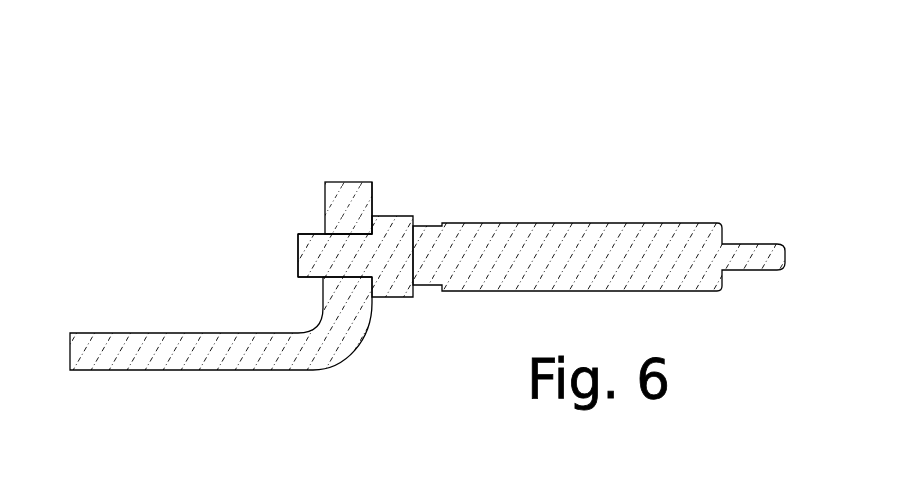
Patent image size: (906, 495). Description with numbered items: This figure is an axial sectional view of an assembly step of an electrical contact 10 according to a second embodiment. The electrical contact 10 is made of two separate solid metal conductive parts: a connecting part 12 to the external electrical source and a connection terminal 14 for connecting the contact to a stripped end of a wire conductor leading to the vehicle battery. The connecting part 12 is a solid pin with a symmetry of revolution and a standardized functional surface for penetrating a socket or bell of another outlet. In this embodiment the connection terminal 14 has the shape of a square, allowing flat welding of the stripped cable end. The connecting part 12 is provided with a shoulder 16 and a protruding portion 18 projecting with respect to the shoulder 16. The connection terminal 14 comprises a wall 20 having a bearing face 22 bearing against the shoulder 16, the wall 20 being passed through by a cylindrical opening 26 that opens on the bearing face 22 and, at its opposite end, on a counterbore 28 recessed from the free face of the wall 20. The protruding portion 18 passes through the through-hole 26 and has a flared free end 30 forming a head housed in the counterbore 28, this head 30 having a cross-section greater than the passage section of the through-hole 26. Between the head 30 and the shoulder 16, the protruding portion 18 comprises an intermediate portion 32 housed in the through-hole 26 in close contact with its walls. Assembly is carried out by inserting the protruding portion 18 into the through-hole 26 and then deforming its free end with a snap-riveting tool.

The electrical contact 10 is at (523, 130).
The connecting part 12 is at (573, 250).
The connection terminal 14 is at (155, 364).
The shoulder 16 is at (368, 226).
The protruding portion 18 is at (204, 243).
The wall 20 is at (345, 325).
The bearing face 22 is at (372, 195).
The cylindrical opening (through-hole) 26 is at (352, 282).
The counterbore 28 is at (327, 234).
The flared free end (head) 30 is at (302, 246).
The intermediate portion 32 is at (335, 258).